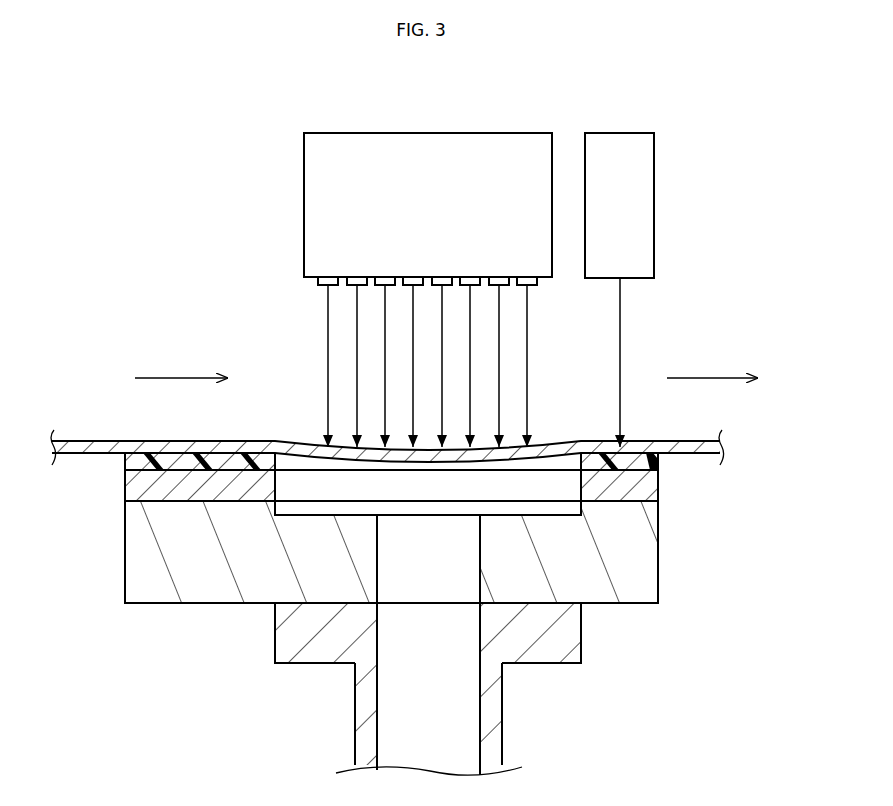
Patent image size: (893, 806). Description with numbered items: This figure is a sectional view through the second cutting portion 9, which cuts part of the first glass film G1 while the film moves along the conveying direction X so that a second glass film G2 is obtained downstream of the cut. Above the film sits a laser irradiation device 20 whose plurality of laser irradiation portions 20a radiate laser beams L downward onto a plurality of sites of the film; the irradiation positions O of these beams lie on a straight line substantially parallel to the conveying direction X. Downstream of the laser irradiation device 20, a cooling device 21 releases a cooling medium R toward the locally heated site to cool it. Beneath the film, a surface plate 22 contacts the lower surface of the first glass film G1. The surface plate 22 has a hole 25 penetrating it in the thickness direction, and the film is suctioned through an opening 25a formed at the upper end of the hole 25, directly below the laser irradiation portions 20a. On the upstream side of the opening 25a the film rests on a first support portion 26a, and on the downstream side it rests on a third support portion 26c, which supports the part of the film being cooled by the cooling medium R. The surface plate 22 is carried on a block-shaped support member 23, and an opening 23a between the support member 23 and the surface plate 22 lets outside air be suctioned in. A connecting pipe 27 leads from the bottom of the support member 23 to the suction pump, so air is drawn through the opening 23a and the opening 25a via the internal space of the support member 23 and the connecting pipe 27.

The second cutting portion 9 is at (686, 173).
The laser irradiation device 20 is at (417, 131).
The laser irradiation portions 20a is at (357, 277).
The cooling device 21 is at (619, 131).
The surface plate 22 is at (125, 490).
The support member 23 is at (170, 588).
The opening 23a is at (550, 508).
The hole 25 is at (573, 496).
The opening 25a is at (580, 447).
The first support portion 26a is at (189, 456).
The third support portion 26c is at (638, 456).
The connecting pipe 27 is at (361, 696).
The laser beam L is at (357, 344).
The cooling medium R is at (622, 332).
The irradiation positions O is at (325, 445).
The conveying direction X is at (446, 365).
The first glass film G1 is at (99, 441).
The second glass film G2 is at (692, 440).